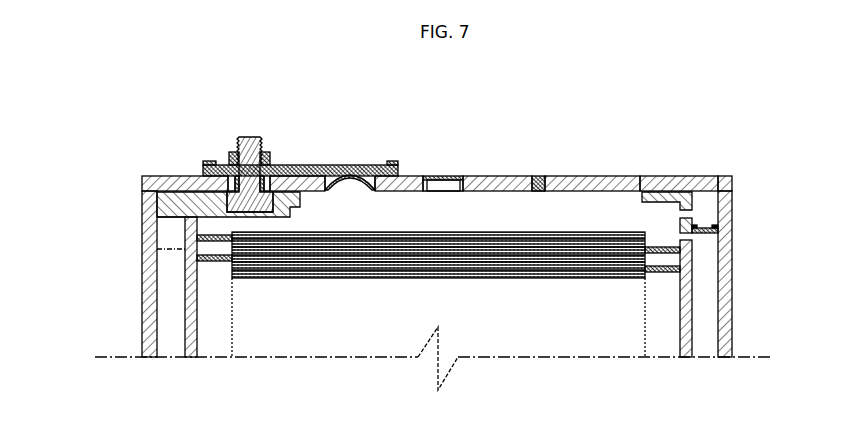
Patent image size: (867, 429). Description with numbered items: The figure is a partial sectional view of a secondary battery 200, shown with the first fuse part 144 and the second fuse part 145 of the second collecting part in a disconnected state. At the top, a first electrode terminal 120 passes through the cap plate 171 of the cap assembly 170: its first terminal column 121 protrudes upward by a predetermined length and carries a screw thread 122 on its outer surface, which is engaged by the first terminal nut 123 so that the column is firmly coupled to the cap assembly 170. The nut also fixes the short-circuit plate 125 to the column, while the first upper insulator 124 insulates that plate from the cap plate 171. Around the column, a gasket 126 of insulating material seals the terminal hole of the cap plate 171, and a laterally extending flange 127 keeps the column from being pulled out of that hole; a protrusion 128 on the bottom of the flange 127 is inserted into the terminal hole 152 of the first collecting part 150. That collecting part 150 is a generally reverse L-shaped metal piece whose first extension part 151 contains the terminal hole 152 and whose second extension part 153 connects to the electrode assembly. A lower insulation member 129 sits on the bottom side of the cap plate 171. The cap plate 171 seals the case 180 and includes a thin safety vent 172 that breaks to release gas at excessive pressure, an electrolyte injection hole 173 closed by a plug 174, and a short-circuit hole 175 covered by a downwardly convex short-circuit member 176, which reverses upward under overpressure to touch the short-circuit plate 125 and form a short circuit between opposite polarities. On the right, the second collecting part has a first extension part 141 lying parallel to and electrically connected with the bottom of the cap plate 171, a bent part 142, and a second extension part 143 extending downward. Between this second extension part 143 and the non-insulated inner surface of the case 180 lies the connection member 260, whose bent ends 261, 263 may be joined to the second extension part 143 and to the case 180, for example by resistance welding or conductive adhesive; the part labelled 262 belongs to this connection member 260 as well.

The secondary battery 200 is at (748, 104).
The first electrode terminal 120 is at (246, 128).
The first terminal column 121 is at (251, 133).
The screw thread 122 is at (232, 150).
The first terminal nut 123 is at (268, 152).
The first upper insulator 124 is at (388, 162).
The short-circuit plate 125 is at (306, 165).
The gasket 126 is at (203, 162).
The flange 127 is at (227, 186).
The protrusion 128 is at (258, 218).
The lower insulation member 129 is at (150, 203).
The first collecting part 150 is at (176, 278).
The first extension part 151 is at (185, 228).
The terminal hole 152 is at (157, 250).
The second extension part 153 is at (187, 303).
The cap assembly 170 is at (493, 174).
The cap plate 171 is at (413, 176).
The safety vent 172 is at (452, 176).
The electrolyte injection hole 173 is at (538, 192).
The plug 174 is at (538, 176).
The short-circuit hole 175 is at (355, 193).
The short-circuit member 176 is at (348, 174).
The first extension part 141 is at (673, 185).
The bent part 142 is at (707, 185).
The second extension part 143 is at (692, 288).
The first fuse part 144 is at (668, 196).
The second fuse part 145 is at (678, 237).
The case 180 is at (730, 330).
The connection member 260 is at (776, 188).
The bent end 261 is at (690, 223).
The fuse contact 262 is at (712, 226).
The bent end 263 is at (718, 232).